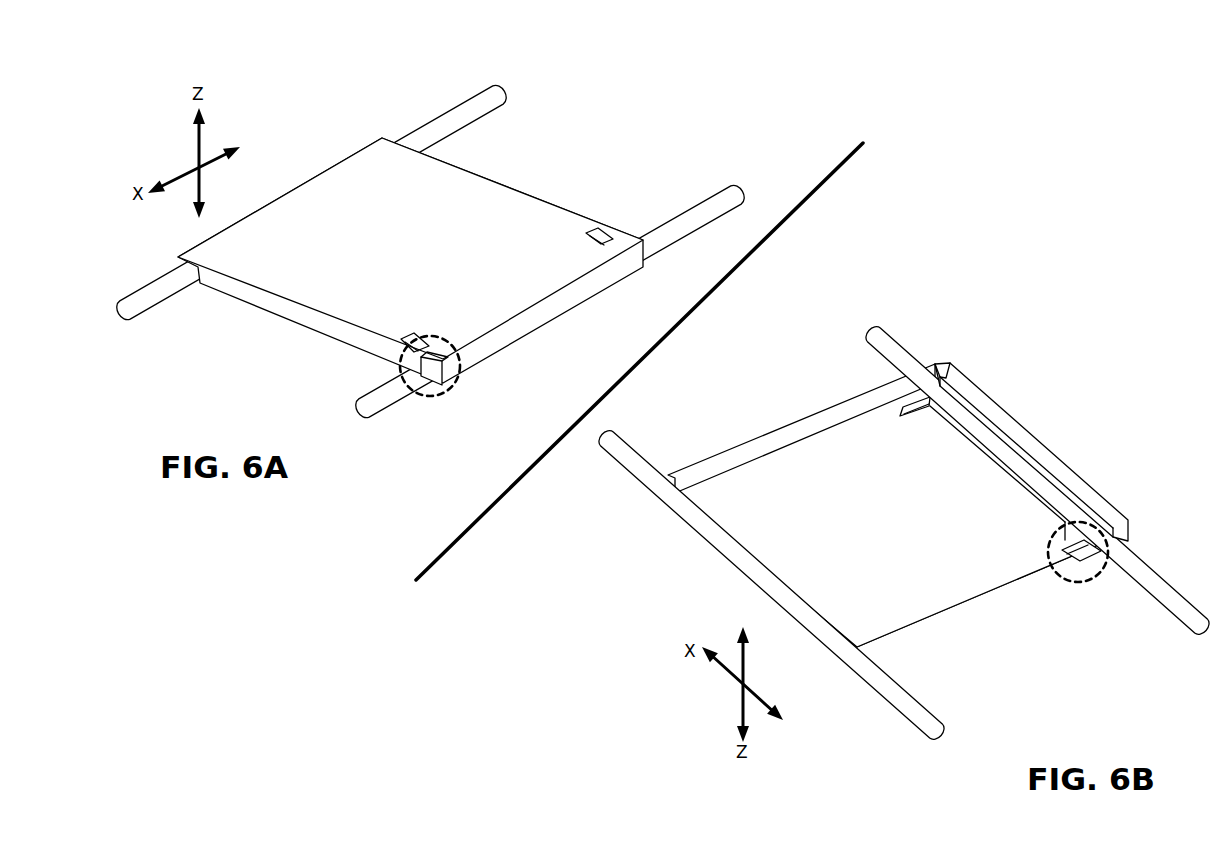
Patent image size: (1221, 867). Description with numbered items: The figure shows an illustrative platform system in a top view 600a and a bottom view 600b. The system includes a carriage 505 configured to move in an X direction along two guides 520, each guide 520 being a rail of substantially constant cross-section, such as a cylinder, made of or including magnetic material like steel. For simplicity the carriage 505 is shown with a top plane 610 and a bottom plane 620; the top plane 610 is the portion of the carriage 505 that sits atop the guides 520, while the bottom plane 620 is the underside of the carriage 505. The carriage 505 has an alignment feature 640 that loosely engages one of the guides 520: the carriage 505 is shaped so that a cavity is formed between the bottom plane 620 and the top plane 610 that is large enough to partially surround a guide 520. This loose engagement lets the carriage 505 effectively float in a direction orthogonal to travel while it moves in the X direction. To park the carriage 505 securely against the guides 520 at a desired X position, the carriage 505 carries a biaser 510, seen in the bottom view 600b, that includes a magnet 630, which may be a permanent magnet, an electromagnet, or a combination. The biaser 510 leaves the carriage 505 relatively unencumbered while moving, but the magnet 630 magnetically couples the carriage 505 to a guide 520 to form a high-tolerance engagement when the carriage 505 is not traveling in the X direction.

In FIG. 6A, the carriage 505 is at (410, 260).
In FIG. 6B, the carriage 505 is at (892, 501).
In FIG. 6B, the biaser 510 is at (1081, 520).
In FIG. 6A, the guide 520 is at (452, 116).
In FIG. 6B, the guide 520 is at (930, 722).
In FIG. 6A, the top plane 610 is at (410, 266).
In FIG. 6B, the bottom plane 620 is at (888, 539).
In FIG. 6B, the magnet 630 is at (1110, 594).
In FIG. 6A, the alignment feature 640 is at (443, 399).
In FIG. 6A, the platform system (top view) 600a is at (583, 106).
In FIG. 6B, the platform system (bottom view) 600b is at (1084, 294).